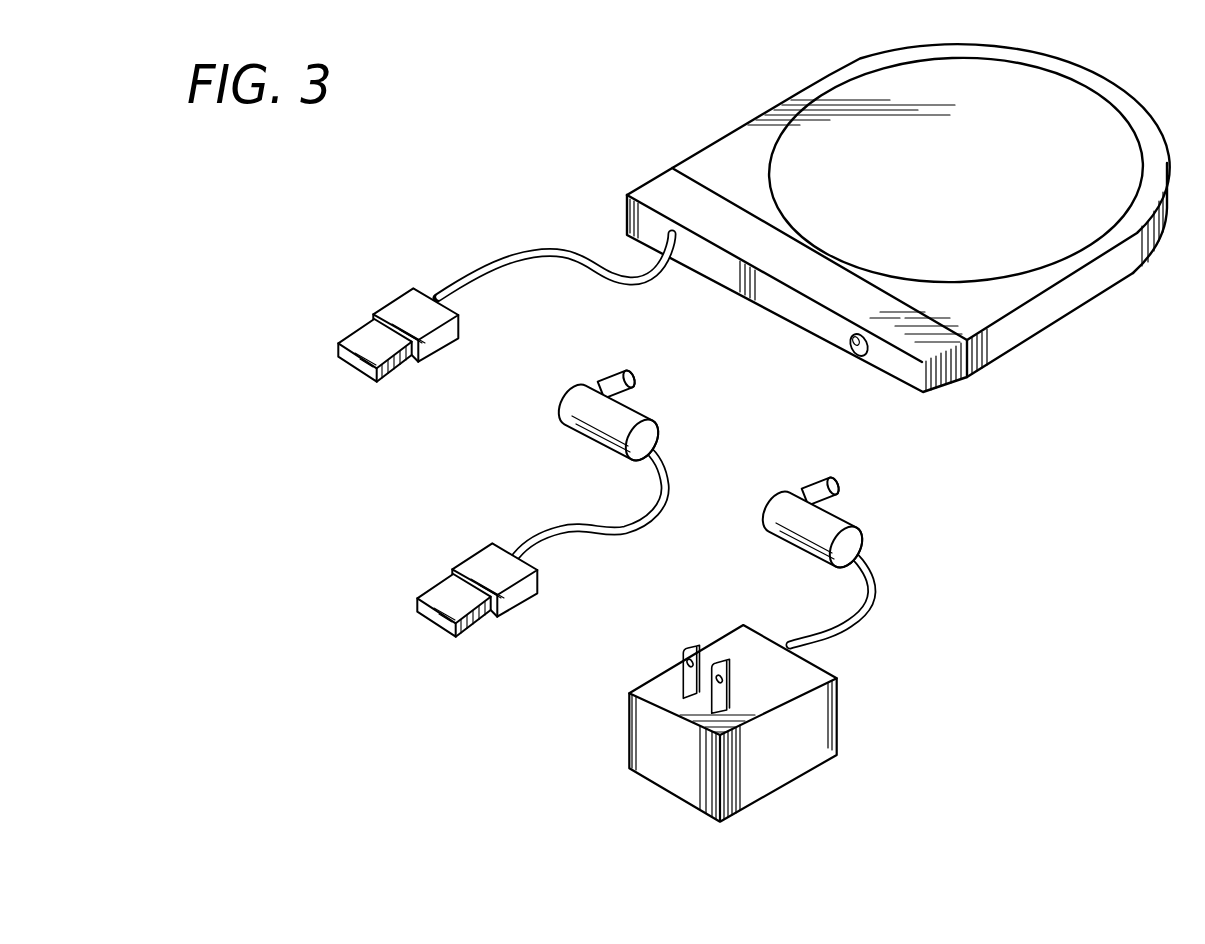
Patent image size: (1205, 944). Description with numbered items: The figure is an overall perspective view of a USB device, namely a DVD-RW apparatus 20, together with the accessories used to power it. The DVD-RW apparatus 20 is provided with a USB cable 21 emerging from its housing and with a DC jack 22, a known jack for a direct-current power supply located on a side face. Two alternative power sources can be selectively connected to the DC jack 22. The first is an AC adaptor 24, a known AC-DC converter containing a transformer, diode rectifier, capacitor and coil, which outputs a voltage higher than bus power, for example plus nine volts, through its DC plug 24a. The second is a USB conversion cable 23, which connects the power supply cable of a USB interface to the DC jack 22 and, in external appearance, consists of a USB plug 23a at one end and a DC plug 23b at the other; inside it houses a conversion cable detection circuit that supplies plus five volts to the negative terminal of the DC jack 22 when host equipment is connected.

The DVD-RW apparatus 20 is at (1030, 340).
The USB cable 21 is at (340, 364).
The DC jack 22 is at (850, 343).
The USB conversion cable 23 is at (427, 618).
The USB plug 23a is at (447, 590).
The DC plug 23b is at (575, 421).
The AC adaptor 24 is at (836, 668).
The DC plug 24a is at (793, 530).